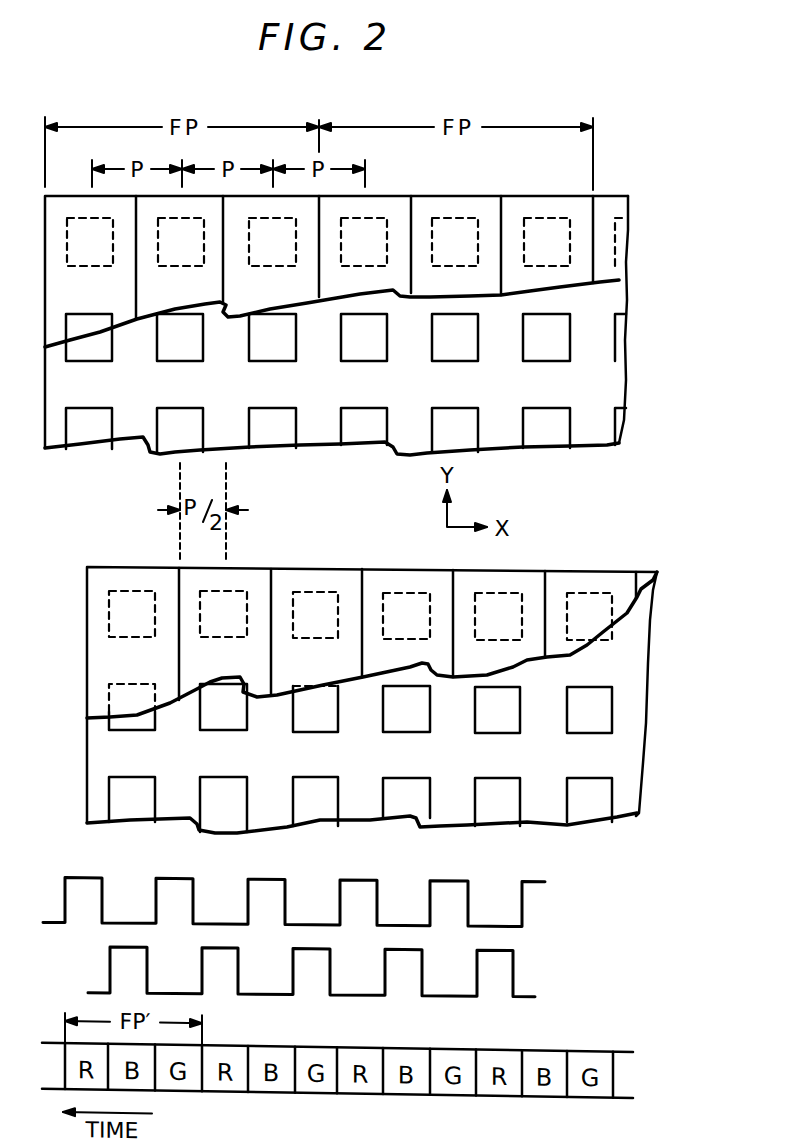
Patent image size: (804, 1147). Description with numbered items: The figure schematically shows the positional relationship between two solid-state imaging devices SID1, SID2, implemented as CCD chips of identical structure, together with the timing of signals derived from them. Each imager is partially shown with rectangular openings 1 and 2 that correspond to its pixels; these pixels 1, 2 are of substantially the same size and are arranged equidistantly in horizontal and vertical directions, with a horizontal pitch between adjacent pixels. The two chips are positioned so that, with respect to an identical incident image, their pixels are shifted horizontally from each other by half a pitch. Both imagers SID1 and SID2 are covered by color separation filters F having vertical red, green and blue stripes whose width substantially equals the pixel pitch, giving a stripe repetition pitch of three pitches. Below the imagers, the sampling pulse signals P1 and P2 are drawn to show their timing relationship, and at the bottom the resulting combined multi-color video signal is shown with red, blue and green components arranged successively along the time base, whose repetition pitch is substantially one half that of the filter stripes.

The rectangular opening 1 is at (112, 412).
The rectangular opening 2 is at (627, 728).
The color separation filter F is at (607, 208).
The solid-state imaging device SID1 is at (608, 380).
The solid-state imaging device SID2 is at (638, 753).
The sampling pulse signal P1 is at (68, 889).
The sampling pulse signal P2 is at (110, 961).